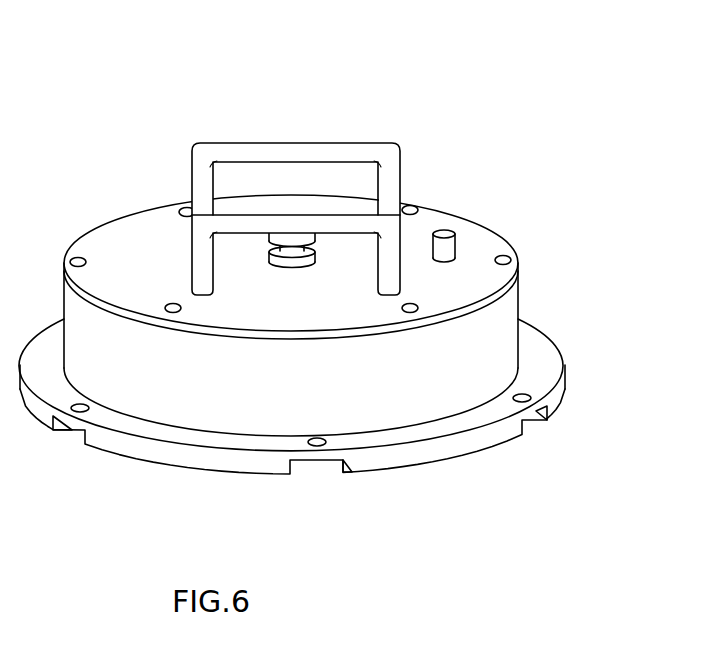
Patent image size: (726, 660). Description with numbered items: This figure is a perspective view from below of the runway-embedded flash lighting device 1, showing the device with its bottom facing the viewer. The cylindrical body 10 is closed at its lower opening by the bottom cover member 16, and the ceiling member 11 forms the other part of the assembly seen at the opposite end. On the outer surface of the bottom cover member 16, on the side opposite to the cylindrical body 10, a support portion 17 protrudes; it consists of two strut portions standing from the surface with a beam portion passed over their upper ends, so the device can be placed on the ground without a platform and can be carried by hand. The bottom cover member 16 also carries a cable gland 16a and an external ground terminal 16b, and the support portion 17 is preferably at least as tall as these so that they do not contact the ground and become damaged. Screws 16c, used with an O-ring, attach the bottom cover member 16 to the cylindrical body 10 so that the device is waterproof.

The runway-embedded flash lighting device 1 is at (385, 53).
The cylindrical body 10 is at (503, 314).
The ceiling member 11 is at (567, 397).
The bottom cover member 16 is at (307, 264).
The cable gland 16a is at (298, 258).
The external ground terminal 16b is at (442, 231).
The screw 16c is at (78, 256).
The support portion 17 is at (293, 160).